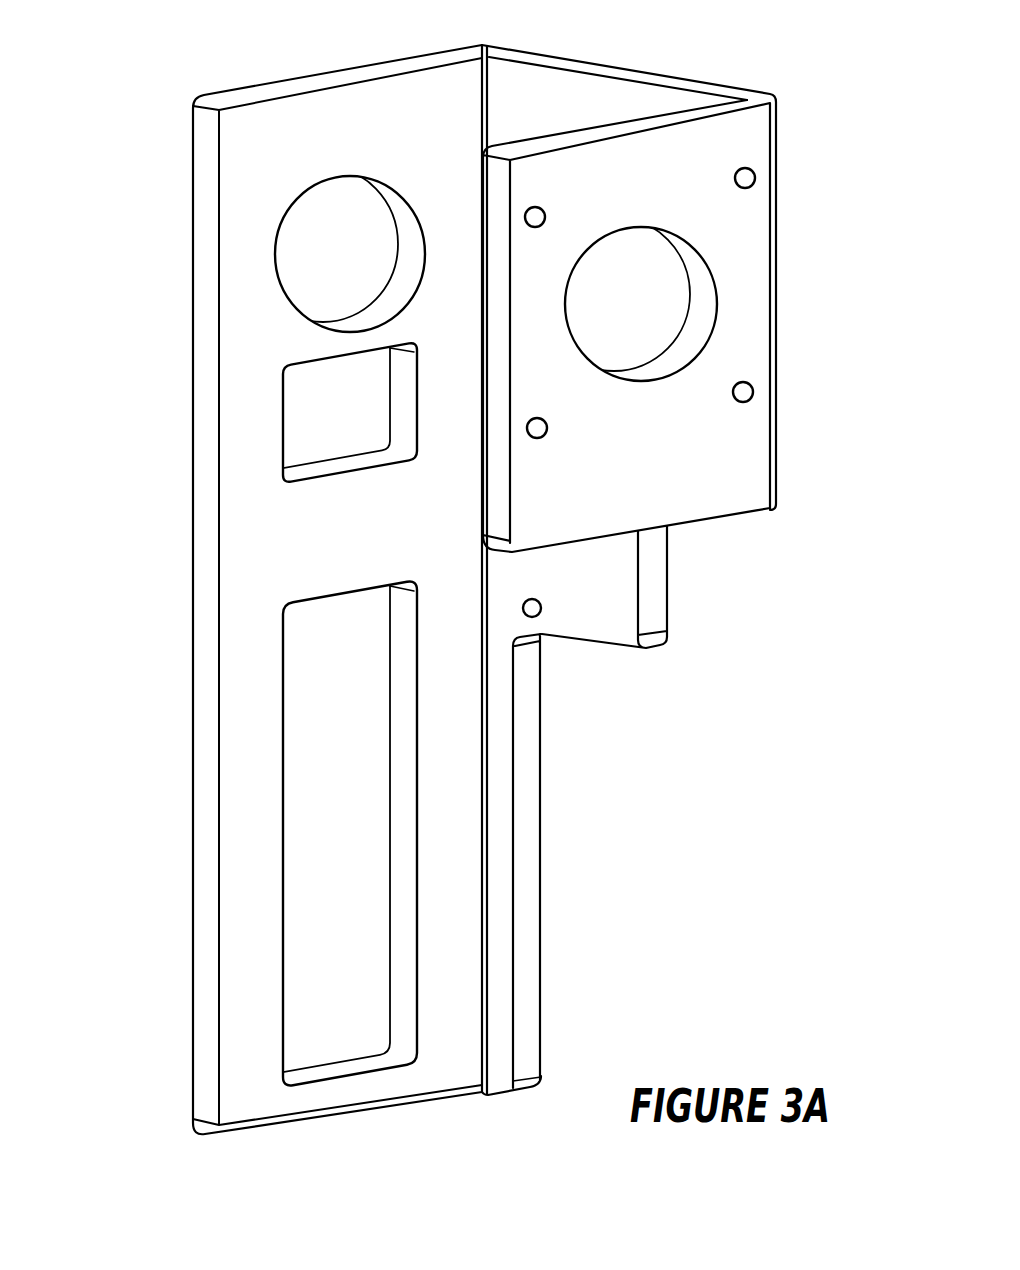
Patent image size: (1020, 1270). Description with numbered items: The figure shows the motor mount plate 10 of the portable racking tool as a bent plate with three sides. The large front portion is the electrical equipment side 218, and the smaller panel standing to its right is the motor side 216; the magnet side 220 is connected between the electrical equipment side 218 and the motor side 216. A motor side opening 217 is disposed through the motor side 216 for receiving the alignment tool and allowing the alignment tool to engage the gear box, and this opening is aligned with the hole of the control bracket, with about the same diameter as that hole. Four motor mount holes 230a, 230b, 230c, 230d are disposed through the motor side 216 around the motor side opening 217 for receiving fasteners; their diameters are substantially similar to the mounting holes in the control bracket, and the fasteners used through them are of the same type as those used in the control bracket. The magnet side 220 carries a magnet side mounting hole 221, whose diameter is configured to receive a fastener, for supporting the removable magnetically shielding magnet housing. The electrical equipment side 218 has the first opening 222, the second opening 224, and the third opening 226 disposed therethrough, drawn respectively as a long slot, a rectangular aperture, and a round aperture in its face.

The motor mount plate 10 is at (149, 75).
The motor side 216 is at (693, 492).
The motor side opening 217 is at (726, 300).
The electrical equipment side 218 is at (203, 574).
The magnet side 220 is at (608, 620).
The magnet side mounting hole 221 is at (509, 610).
The first opening 222 is at (431, 825).
The second opening 224 is at (431, 418).
The third opening 226 is at (432, 264).
The motor mount hole 230a is at (578, 193).
The motor mount hole 230b is at (770, 177).
The motor mount hole 230c is at (560, 431).
The motor mount hole 230d is at (771, 388).